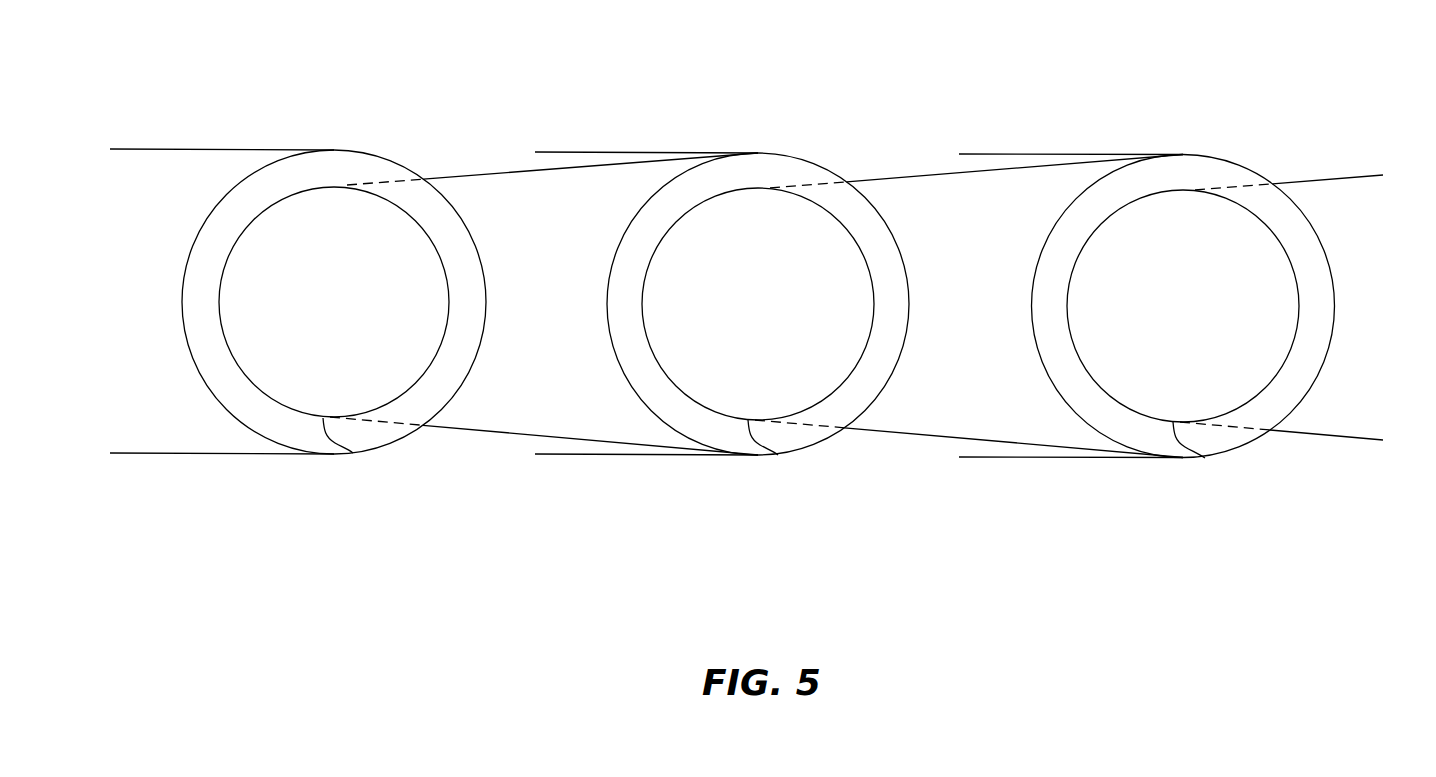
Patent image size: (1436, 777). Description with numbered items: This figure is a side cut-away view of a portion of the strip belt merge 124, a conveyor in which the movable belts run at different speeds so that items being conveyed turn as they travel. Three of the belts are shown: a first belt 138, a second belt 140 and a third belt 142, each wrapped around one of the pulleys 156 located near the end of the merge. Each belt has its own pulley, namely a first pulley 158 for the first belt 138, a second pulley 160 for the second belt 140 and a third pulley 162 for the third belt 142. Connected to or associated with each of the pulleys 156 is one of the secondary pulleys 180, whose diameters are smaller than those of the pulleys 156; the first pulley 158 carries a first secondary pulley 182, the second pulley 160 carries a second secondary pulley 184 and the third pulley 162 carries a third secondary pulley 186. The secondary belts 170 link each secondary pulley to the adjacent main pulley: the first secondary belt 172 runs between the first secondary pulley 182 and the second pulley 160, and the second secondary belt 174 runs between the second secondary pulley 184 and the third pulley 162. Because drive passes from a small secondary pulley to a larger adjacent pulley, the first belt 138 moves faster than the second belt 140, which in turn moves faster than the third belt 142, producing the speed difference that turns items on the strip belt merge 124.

The strip belt merge 124 is at (1337, 116).
The first belt 138 is at (167, 149).
The second belt 140 is at (592, 152).
The third belt 142 is at (1018, 154).
The pulleys 156 is at (168, 242).
The first pulley 158 is at (375, 150).
The second pulley 160 is at (800, 156).
The third pulley 162 is at (1223, 158).
The secondary belts 170 is at (502, 443).
The first secondary belt 172 is at (603, 455).
The second secondary belt 174 is at (1012, 458).
The secondary pulleys 180 is at (225, 347).
The first secondary pulley 182 is at (353, 453).
The second secondary pulley 184 is at (778, 455).
The third secondary pulley 186 is at (1205, 458).